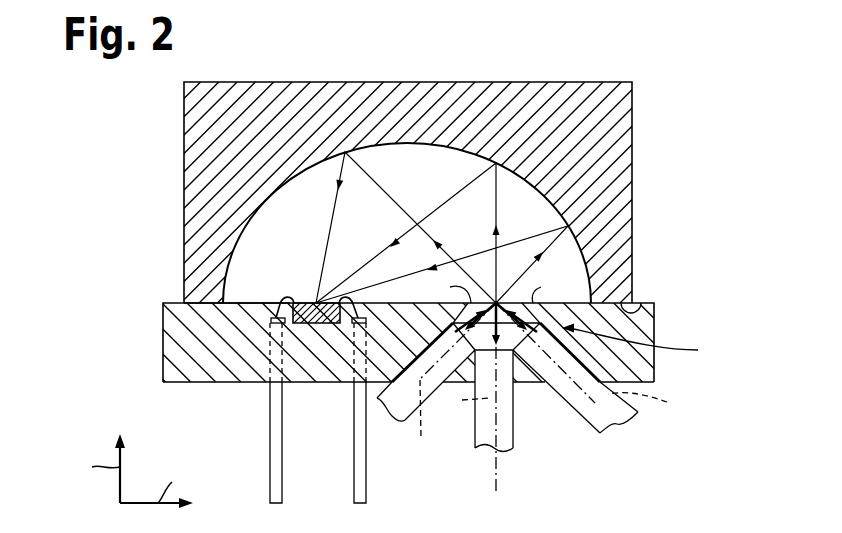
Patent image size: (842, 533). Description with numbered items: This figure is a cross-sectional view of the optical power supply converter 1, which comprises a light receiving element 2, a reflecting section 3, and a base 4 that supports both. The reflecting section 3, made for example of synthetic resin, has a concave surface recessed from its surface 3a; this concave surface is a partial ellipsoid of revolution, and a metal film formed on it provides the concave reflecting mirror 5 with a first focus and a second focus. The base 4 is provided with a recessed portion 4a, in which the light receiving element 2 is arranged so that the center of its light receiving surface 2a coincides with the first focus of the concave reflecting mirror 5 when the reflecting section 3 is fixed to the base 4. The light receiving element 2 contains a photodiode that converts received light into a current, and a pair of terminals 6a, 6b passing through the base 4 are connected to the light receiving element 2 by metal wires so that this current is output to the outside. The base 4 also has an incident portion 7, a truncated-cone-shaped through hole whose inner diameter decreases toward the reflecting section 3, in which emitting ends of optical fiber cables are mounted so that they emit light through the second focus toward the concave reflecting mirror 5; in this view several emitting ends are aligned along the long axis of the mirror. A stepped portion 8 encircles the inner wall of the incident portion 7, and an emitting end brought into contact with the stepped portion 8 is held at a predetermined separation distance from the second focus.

The optical power supply converter 1 is at (149, 120).
The light receiving element 2 is at (280, 323).
The light receiving surface 2a is at (315, 302).
The reflecting section 3 is at (632, 119).
The surface 3a is at (640, 305).
The base 4 is at (163, 373).
The recessed portion 4a is at (257, 309).
The concave reflecting mirror 5 is at (518, 200).
The terminal 6a is at (365, 480).
The terminal 6b is at (270, 480).
The incident portion 7 is at (547, 303).
The stepped portion 8 is at (538, 335).